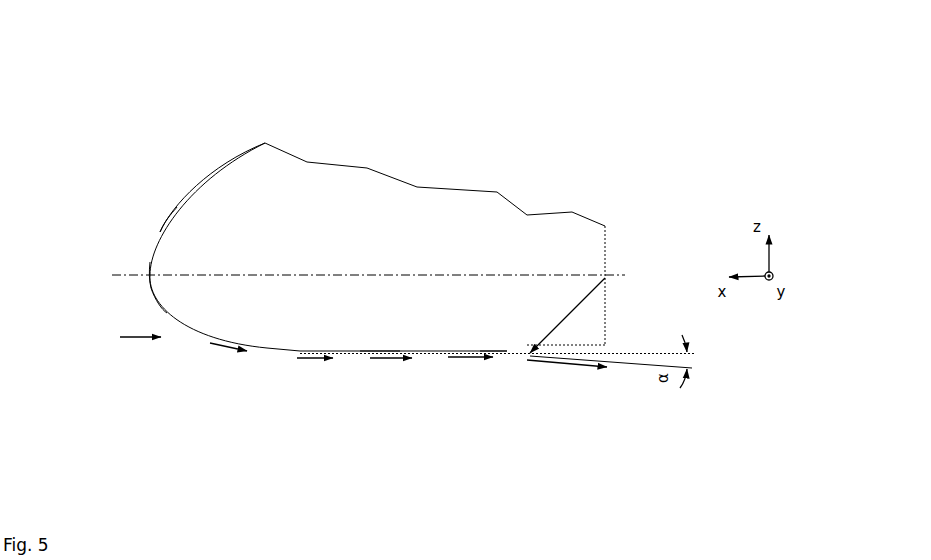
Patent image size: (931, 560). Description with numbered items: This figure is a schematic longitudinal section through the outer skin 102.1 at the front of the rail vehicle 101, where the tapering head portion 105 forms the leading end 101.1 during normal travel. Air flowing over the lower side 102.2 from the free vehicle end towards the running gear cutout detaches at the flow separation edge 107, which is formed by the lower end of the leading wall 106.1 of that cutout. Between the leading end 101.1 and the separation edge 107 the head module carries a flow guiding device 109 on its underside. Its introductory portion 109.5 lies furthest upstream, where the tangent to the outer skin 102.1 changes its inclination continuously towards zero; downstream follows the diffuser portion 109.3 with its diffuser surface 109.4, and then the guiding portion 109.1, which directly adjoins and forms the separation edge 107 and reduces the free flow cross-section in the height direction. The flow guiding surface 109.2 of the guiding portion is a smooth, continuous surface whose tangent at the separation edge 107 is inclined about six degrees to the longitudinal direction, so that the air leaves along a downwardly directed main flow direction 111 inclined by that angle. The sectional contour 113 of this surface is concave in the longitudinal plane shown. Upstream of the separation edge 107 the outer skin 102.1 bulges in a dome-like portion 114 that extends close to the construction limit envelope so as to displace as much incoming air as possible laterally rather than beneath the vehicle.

The rail vehicle 101 is at (702, 60).
The leading end 101.1 is at (150, 275).
The outer skin 102.1 is at (170, 217).
The lower side 102.2 is at (356, 373).
The head portion 105 is at (190, 190).
The leading wall 106.1 is at (593, 287).
The flow separation edge 107 is at (530, 350).
The flow guiding device 109 is at (428, 367).
The guiding portion 109.1 is at (507, 342).
The flow guiding surface 109.2 is at (508, 357).
The diffuser portion 109.3 is at (382, 342).
The diffuser surface 109.4 is at (377, 357).
The introductory portion 109.5 is at (258, 356).
The main flow direction 111 is at (562, 367).
The sectional contour 113 is at (155, 297).
The dome-like portion 114 is at (312, 352).